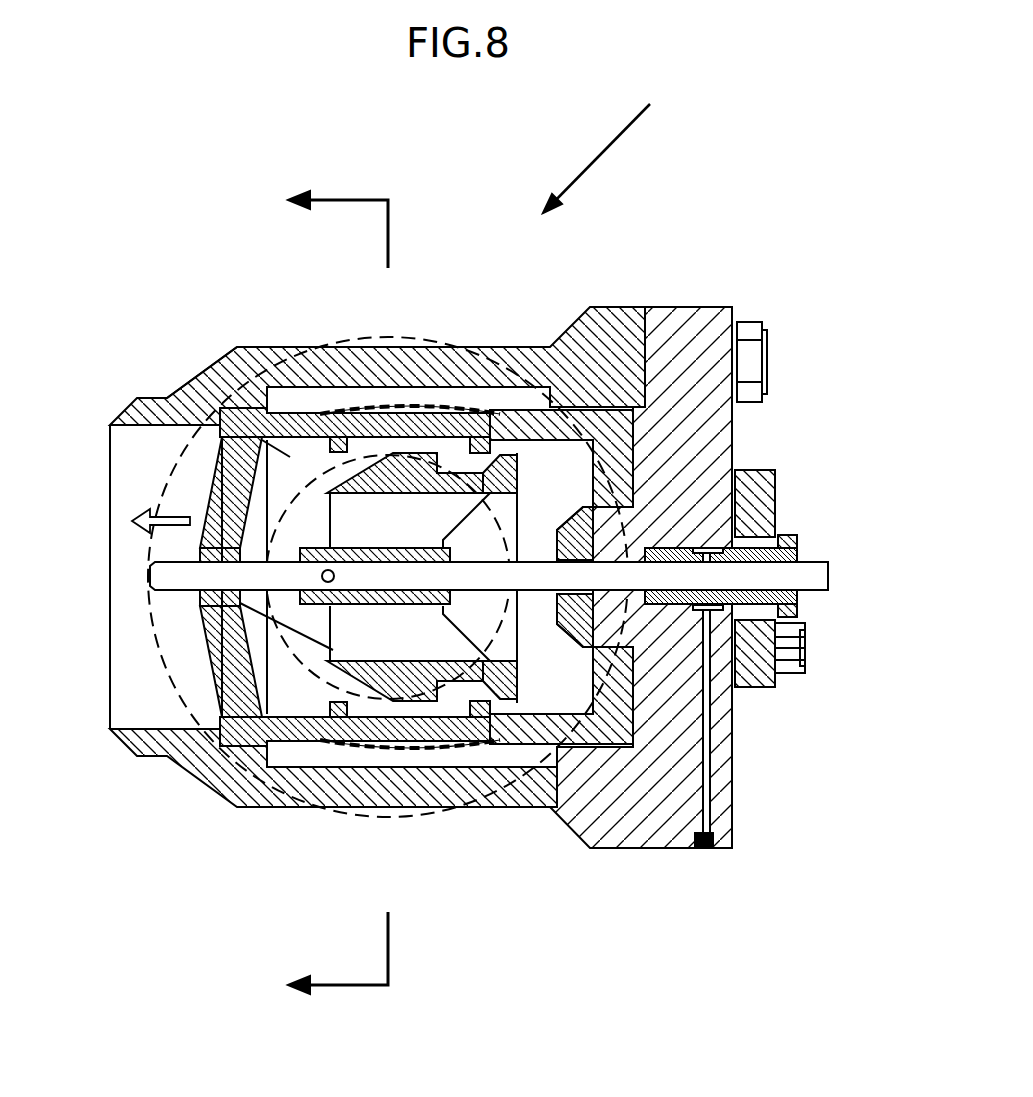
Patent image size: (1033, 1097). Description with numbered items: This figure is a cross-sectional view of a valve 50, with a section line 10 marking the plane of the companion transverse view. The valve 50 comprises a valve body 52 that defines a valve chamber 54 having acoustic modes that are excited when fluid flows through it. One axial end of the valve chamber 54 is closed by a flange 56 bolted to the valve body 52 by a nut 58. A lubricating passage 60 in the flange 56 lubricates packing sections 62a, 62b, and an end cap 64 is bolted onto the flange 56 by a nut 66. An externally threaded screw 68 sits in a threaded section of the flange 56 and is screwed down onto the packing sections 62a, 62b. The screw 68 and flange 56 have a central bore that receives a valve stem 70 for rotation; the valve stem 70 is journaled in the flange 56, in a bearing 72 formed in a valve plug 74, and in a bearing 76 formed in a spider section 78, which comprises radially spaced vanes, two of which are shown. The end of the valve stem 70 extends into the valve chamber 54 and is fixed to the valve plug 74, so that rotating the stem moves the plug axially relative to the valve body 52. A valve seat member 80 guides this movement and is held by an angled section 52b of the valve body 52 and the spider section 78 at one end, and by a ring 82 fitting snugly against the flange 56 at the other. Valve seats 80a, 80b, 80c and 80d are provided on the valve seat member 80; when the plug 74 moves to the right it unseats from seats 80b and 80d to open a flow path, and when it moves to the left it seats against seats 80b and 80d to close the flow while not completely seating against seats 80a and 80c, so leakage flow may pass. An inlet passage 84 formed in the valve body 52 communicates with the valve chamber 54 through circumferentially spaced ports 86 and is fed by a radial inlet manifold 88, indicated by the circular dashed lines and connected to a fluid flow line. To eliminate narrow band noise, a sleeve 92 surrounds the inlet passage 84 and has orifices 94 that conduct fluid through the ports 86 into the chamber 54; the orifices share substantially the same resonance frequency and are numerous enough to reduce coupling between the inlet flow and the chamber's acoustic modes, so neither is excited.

The section line 10 is at (317, 595).
The valve 50 is at (599, 144).
The valve body 52 is at (232, 347).
The angled section 52b is at (223, 453).
The valve chamber 54 is at (223, 380).
The flange 56 is at (717, 420).
The nut 58 is at (748, 320).
The lubricating passage 60 is at (708, 812).
The packing section 62a is at (693, 460).
The packing section 62b is at (718, 538).
The end cap 64 is at (765, 688).
The nut 66 is at (806, 647).
The externally threaded screw 68 is at (790, 545).
The valve stem 70 is at (173, 573).
The bearing 72 is at (340, 640).
The valve plug 74 is at (387, 700).
The bearing 76 is at (225, 606).
The spider section 78 is at (222, 500).
The valve seat member 80 is at (388, 566).
The valve seat 80a is at (338, 437).
The valve seat 80b is at (482, 437).
The valve seat 80c is at (337, 715).
The valve seat 80d is at (482, 716).
The ring 82 is at (590, 507).
The inlet passage 84 is at (395, 406).
The ports 86 is at (445, 410).
The radial inlet manifold 88 is at (322, 673).
The sleeve 92 is at (362, 410).
The orifices 94 is at (405, 410).